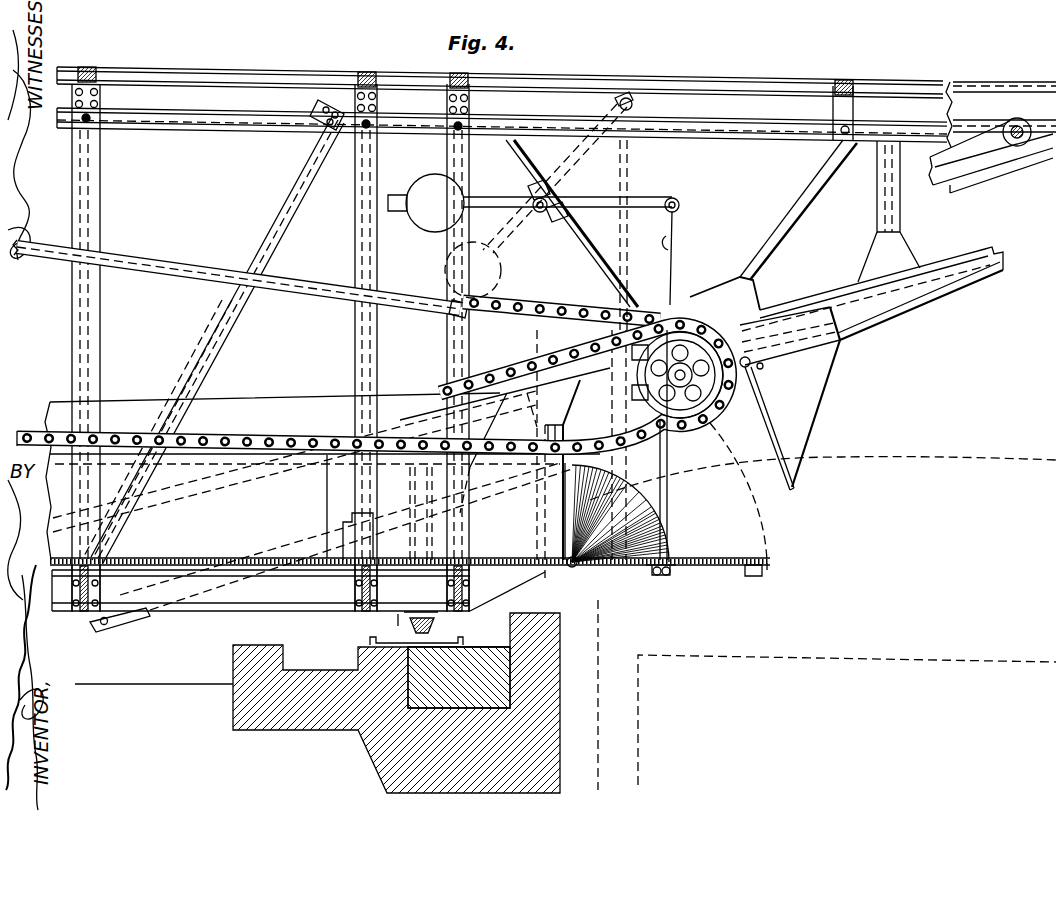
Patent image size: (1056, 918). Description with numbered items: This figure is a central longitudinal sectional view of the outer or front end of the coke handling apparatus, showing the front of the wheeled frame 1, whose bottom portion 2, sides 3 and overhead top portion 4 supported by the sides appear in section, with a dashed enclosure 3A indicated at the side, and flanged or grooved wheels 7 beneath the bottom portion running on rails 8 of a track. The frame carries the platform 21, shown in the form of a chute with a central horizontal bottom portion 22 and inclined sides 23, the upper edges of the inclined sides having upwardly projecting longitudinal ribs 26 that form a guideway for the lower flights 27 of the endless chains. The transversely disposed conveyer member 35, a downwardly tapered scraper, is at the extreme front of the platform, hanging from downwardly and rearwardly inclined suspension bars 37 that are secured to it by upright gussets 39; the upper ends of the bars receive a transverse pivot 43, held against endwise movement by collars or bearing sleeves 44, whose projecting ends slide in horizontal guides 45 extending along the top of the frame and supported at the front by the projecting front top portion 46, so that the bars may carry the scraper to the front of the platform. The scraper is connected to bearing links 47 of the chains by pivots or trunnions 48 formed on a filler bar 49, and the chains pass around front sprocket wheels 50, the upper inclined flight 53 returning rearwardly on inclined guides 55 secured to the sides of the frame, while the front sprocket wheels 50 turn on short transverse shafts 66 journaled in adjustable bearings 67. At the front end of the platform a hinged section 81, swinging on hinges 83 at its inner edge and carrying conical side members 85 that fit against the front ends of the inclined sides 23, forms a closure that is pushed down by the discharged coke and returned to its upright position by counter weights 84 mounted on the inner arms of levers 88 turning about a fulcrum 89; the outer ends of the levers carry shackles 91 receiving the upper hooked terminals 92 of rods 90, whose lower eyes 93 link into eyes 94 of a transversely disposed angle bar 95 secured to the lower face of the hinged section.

The wheeled frame 1 is at (335, 507).
The bottom portion 2 is at (202, 610).
The sides 3 is at (352, 246).
The dashed enclosure 3A is at (827, 695).
The overhead top portion 4 is at (236, 75).
The flanged or grooved wheels 7 is at (436, 634).
The rails 8 is at (406, 632).
The platform 21 is at (50, 450).
The central horizontal bottom portion 22 is at (200, 551).
The inclined sides 23 is at (244, 515).
The longitudinal ribs 26 is at (310, 458).
The lower flights 27 is at (248, 434).
The conveyer member 35 is at (796, 488).
The suspension bars 37 is at (924, 180).
The gussets 39 is at (822, 400).
The transverse pivot 43 is at (1017, 146).
The collars or bearing sleeves 44 is at (991, 148).
The horizontal guides 45 is at (722, 140).
The projecting front top portion 46 is at (1004, 97).
The bearing links 47 is at (750, 365).
The pivots or trunnions 48 is at (790, 336).
The filler bar 49 is at (764, 366).
The front sprocket wheels 50 is at (712, 418).
The upper inclined flight 53 is at (508, 305).
The inclined guides 55 is at (195, 250).
The short transverse shafts 66 is at (684, 370).
The adjustable bearings 67 is at (696, 405).
The hinged section 81 is at (632, 570).
The hinges 83 is at (580, 558).
The counter weights 84 is at (420, 218).
The conical side members 85 is at (650, 518).
The levers 88 is at (600, 204).
The fulcrum 89 is at (541, 214).
The rods 90 is at (674, 260).
The shackles 91 is at (680, 208).
The upper hooked terminals 92 is at (668, 235).
The eyes 93 is at (668, 578).
The eyes 94 is at (663, 580).
The transversely disposed angle bar 95 is at (648, 578).